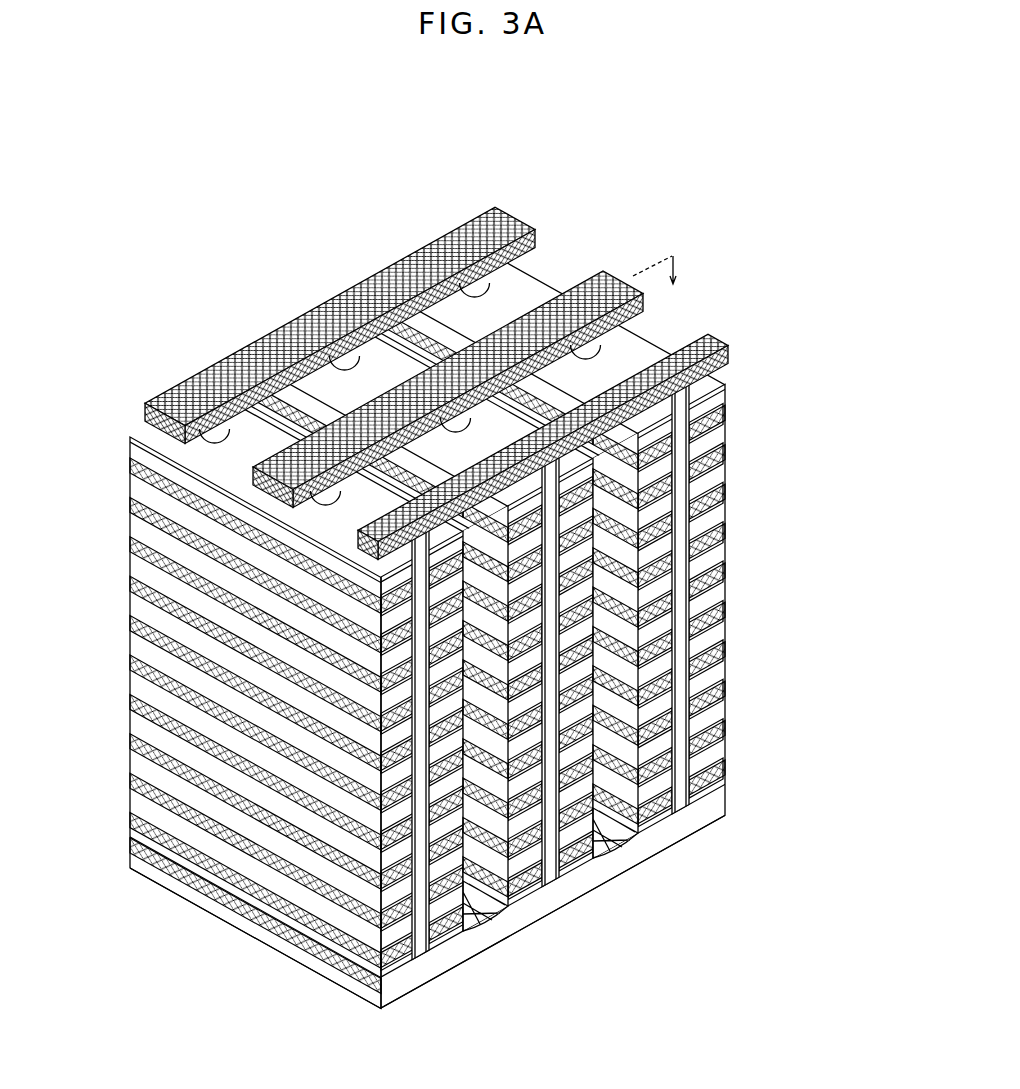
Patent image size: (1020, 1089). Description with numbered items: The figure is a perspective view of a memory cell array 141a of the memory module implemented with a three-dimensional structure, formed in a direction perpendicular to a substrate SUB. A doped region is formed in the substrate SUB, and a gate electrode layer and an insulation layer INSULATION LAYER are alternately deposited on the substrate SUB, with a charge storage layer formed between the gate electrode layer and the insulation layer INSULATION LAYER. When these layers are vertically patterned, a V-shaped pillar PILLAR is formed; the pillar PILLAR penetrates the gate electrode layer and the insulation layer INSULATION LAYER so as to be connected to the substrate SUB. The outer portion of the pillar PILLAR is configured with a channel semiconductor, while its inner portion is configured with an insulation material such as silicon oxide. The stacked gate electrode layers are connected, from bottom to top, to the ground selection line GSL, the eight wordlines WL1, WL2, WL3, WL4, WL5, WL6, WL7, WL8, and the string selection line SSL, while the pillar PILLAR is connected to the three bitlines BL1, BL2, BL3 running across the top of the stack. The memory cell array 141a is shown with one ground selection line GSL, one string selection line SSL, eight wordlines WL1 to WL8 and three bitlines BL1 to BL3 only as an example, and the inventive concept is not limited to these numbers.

The memory cell array 141a is at (457, 553).
The first bitline BL1 is at (510, 213).
The second bitline BL2 is at (603, 273).
The third bitline BL3 is at (713, 333).
The string selection line SSL is at (130, 468).
The eighth wordline WL8 is at (130, 508).
The seventh wordline WL7 is at (130, 548).
The sixth wordline WL6 is at (130, 587).
The fifth wordline WL5 is at (130, 627).
The fourth wordline WL4 is at (130, 666).
The third wordline WL3 is at (130, 705).
The second wordline WL2 is at (130, 743).
The first wordline WL1 is at (130, 783).
The ground selection line GSL is at (130, 823).
The substrate SUB is at (130, 860).
The pillar PILLAR is at (550, 662).
The insulation layer INSULATION LAYER is at (720, 618).